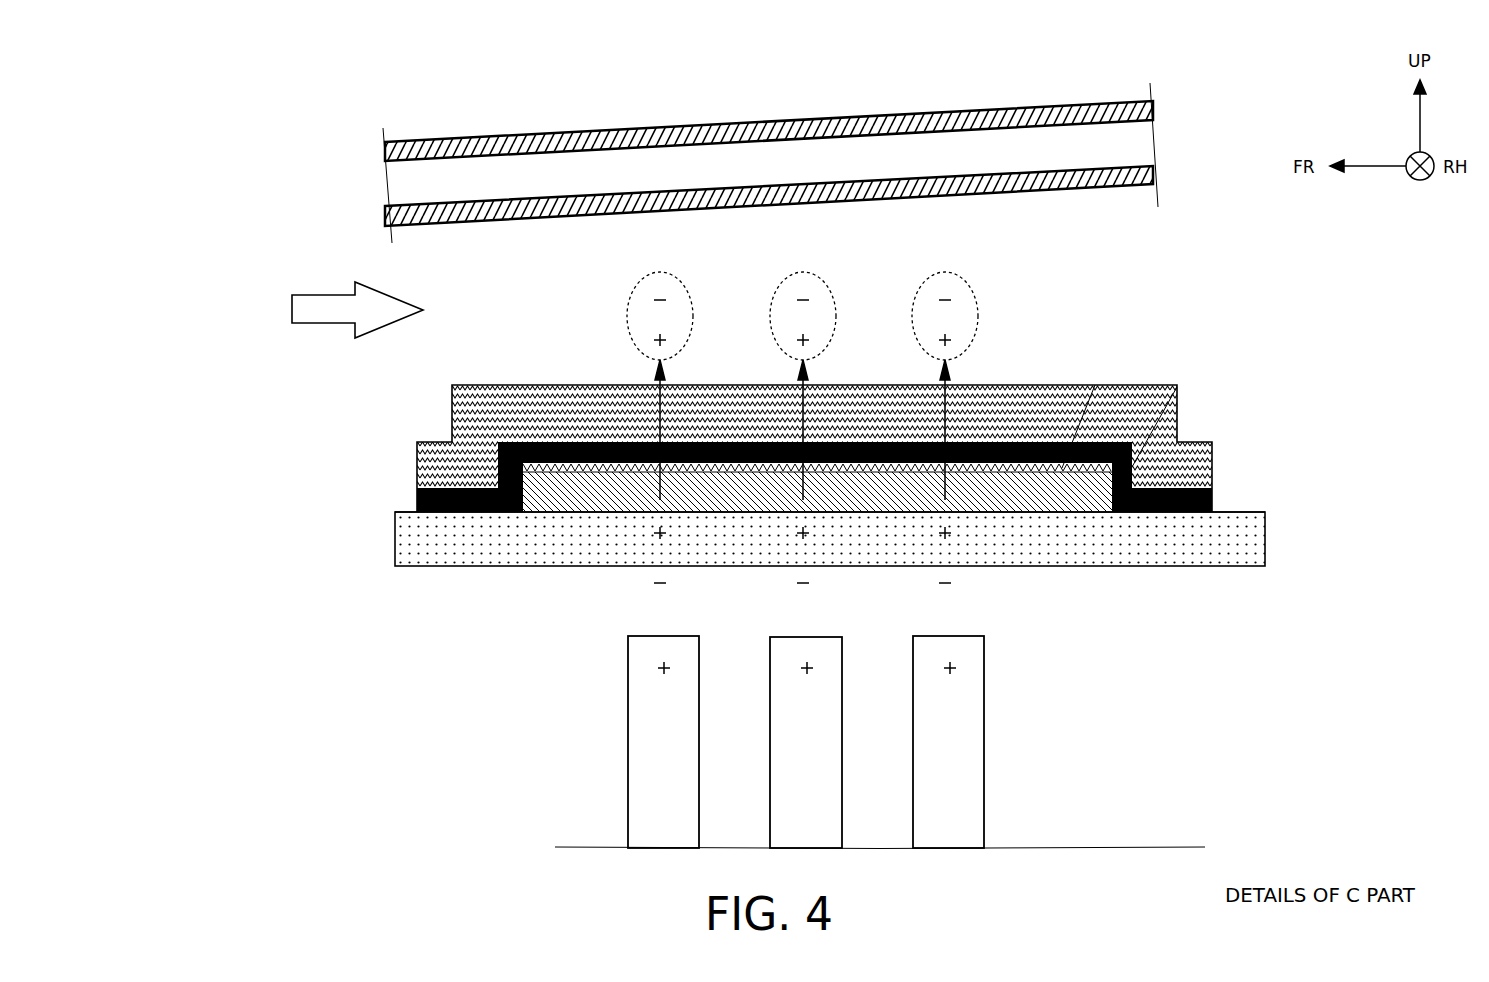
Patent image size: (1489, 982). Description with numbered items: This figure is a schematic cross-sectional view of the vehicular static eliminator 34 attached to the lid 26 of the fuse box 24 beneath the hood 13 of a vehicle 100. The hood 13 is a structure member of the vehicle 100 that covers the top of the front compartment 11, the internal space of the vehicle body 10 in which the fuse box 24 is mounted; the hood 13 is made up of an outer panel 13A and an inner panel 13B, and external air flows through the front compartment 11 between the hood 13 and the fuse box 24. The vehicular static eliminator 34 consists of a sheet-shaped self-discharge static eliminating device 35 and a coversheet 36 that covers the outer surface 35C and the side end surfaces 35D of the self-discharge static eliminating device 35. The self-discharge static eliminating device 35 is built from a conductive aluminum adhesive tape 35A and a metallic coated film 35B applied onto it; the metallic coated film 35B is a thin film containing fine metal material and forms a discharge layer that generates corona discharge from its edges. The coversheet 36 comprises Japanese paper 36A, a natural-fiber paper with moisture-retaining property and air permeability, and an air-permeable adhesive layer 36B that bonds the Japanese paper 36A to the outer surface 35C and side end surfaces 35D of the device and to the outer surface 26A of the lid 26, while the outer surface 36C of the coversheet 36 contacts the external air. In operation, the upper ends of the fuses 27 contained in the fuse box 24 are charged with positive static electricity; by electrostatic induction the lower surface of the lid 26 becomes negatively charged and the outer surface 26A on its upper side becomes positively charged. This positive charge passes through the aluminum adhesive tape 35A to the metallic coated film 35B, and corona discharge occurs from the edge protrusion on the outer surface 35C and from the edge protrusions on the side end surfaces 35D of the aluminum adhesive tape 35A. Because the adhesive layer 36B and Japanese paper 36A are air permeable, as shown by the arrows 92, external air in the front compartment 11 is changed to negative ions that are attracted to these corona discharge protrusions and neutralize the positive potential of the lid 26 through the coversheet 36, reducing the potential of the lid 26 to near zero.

The vehicle body 10 is at (342, 147).
The hood 13 is at (1083, 105).
The outer panel 13A is at (985, 108).
The inner panel 13B is at (1073, 185).
The front compartment 11 is at (476, 300).
The vehicle 100 is at (233, 397).
The fuse box 24 is at (290, 723).
The lid 26 is at (395, 532).
The outer surface 26A is at (402, 512).
The fuses 27 is at (985, 795).
The vehicular static eliminator 34 is at (1418, 453).
The self-discharge static eliminating device 35 is at (1357, 603).
The aluminum adhesive tape 35A is at (998, 498).
The metallic coated film 35B is at (1033, 470).
The outer surface 35C is at (1175, 387).
The side end surfaces 35D is at (1177, 428).
The coversheet 36 is at (1357, 433).
The Japanese paper 36A is at (1213, 463).
The adhesive layer 36B is at (1213, 497).
The outer surface 36C is at (1095, 385).
The arrows 92 is at (965, 387).